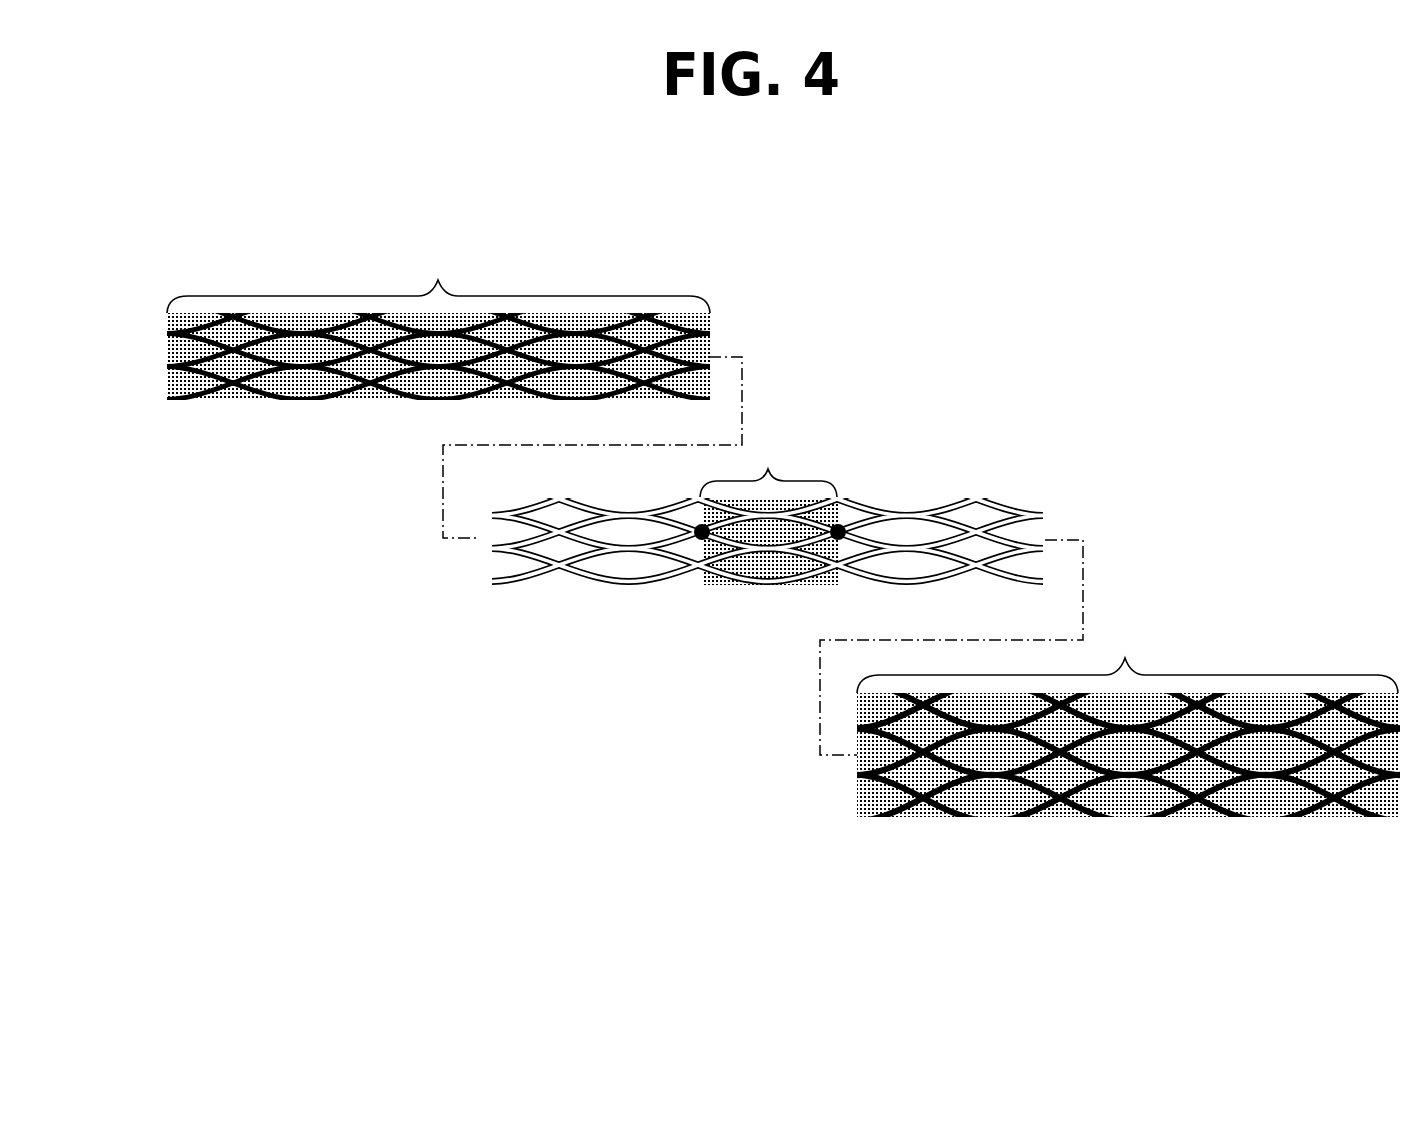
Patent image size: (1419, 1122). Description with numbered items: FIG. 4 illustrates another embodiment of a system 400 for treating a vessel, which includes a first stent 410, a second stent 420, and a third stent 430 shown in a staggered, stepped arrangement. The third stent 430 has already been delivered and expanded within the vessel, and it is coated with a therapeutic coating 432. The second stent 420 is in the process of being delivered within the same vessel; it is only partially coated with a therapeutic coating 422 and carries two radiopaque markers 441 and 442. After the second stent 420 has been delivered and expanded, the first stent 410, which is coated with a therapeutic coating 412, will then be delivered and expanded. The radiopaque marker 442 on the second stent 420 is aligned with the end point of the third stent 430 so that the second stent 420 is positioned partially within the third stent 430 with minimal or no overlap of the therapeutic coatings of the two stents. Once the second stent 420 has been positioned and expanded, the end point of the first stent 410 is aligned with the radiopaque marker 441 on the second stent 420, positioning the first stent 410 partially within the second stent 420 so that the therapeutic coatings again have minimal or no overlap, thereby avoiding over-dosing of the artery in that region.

The system 400 is at (270, 205).
The first stent 410 is at (213, 407).
The therapeutic coating 412 is at (438, 324).
The second stent 420 is at (543, 590).
The therapeutic coating 422 is at (769, 514).
The radiopaque marker 441 is at (701, 541).
The radiopaque marker 442 is at (837, 541).
The third stent 430 is at (905, 820).
The therapeutic coating 432 is at (1128, 725).